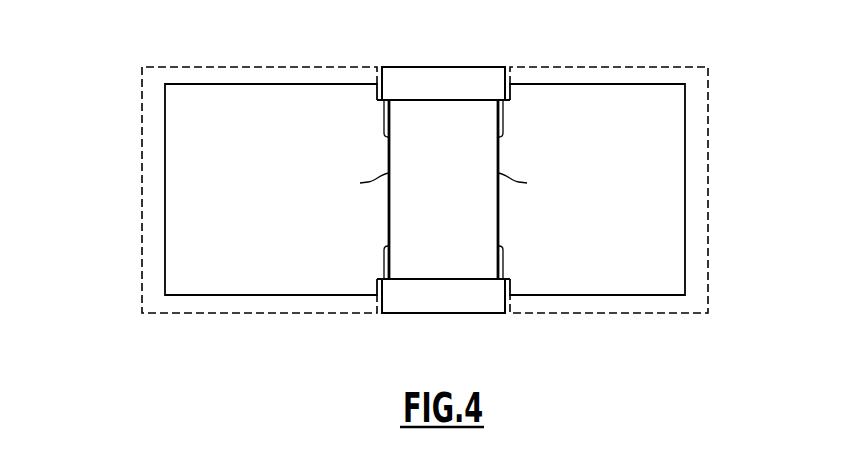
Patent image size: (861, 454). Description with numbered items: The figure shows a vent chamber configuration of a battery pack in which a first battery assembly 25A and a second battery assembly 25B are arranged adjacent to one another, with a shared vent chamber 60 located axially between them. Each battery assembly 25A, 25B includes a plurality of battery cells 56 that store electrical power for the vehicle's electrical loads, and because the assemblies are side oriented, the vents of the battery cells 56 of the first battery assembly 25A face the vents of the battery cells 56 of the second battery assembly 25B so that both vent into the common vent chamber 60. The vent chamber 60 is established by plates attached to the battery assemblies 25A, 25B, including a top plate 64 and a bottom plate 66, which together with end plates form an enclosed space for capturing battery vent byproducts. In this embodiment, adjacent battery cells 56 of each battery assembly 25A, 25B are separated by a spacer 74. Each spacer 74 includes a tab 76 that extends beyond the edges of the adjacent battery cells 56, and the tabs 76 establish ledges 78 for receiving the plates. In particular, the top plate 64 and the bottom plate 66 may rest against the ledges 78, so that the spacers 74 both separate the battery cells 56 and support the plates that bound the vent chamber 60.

The first battery assembly 25A is at (128, 98).
The second battery assembly 25B is at (721, 98).
The battery cell 56 is at (227, 68).
The vent chamber 60 is at (460, 222).
The top plate 64 is at (434, 82).
The bottom plate 66 is at (434, 299).
The spacer 74 is at (292, 207).
The tab 76 is at (389, 172).
The ledge 78 is at (388, 137).